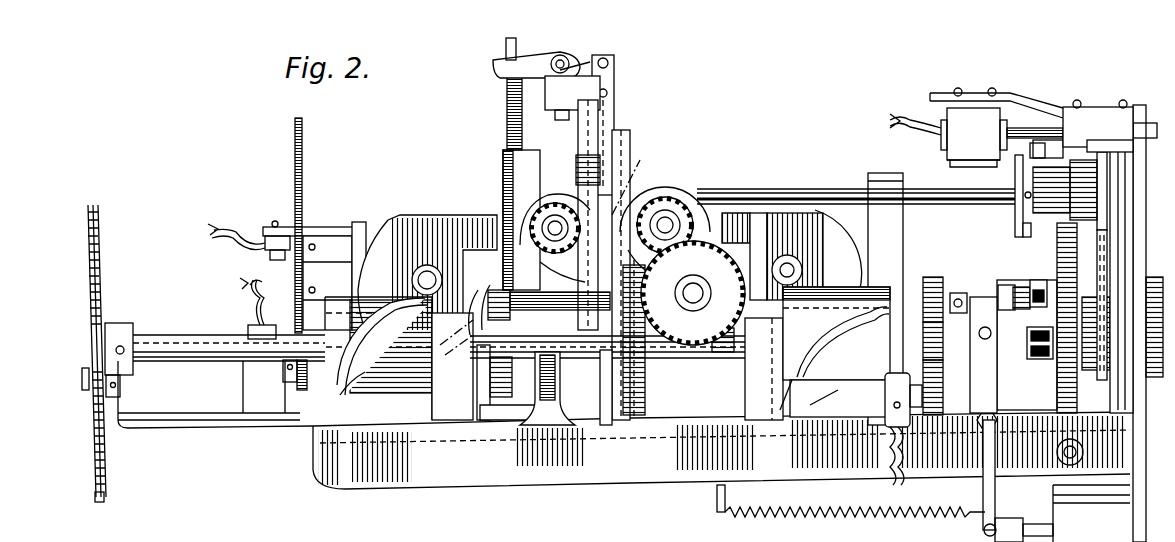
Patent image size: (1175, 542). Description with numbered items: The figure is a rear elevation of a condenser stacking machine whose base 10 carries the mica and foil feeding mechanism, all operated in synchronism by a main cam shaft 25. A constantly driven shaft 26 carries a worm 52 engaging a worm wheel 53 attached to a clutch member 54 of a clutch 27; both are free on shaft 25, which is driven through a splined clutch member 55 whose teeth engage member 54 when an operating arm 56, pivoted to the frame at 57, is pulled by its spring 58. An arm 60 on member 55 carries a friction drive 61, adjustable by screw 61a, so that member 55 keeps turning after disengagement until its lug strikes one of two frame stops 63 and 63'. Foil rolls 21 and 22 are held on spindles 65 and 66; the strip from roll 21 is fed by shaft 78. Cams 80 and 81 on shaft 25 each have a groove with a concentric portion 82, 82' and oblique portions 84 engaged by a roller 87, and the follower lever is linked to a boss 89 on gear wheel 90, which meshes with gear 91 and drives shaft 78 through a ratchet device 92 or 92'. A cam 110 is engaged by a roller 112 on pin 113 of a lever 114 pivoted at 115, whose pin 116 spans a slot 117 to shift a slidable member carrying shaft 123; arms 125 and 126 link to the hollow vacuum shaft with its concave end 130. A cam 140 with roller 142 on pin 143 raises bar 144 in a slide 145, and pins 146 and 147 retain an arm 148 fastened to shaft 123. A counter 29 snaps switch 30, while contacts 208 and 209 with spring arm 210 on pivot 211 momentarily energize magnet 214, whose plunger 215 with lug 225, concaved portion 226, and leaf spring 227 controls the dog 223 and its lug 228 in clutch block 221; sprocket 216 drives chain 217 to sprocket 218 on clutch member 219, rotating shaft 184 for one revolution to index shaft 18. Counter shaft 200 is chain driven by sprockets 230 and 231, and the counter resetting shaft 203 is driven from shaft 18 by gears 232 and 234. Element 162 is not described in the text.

The base 10 is at (633, 483).
The shaft 18 is at (362, 232).
The foil roll 21 is at (832, 242).
The foil roll 22 is at (390, 240).
The main cam shaft 25 is at (700, 352).
The constantly driven shaft 26 is at (1077, 455).
The clutch 27 is at (980, 300).
The counter 29 is at (190, 342).
The switch 30 is at (268, 332).
The worm 52 is at (1082, 447).
The worm wheel 53 is at (1057, 252).
The clutch member 54 is at (1027, 345).
The clutch member 55 is at (1027, 355).
The operating arm 56 is at (983, 490).
The pivot 57 is at (983, 428).
The spring 58 is at (830, 512).
The arm 60 is at (1003, 288).
The friction drive 61 is at (1038, 286).
The adjusting screw 61a is at (1020, 287).
The stop 63 is at (919, 386).
The stop 63' is at (919, 307).
The spindle 65 is at (787, 256).
The spindle 66 is at (427, 265).
The shaft 78 is at (660, 195).
The cam 80 is at (828, 399).
The cam 81 is at (395, 389).
The concentric portion 82 is at (796, 396).
The concentric portion 82' is at (374, 367).
The oblique portion 84 is at (385, 335).
The roller 87 is at (850, 338).
The boss 89 is at (507, 372).
The gear wheel 90 is at (718, 252).
The gear 91 is at (680, 205).
The ratchet device 92 is at (614, 254).
The ratchet device 92' is at (551, 210).
The cam 110 is at (646, 405).
The roller 112 is at (611, 354).
The pin 113 is at (555, 388).
The lever 114 is at (542, 235).
The pivot 115 is at (547, 275).
The pin 116 is at (577, 168).
The slot 117 is at (630, 132).
The shaft 123 is at (584, 58).
The arm 125 is at (612, 58).
The arm 126 is at (612, 78).
The concave end 130 is at (640, 173).
The cam 140 is at (508, 383).
The following roller 142 is at (452, 366).
The pin 143 is at (555, 325).
The bar 144 is at (507, 100).
The slide 145 is at (503, 163).
The pin 146 is at (512, 38).
The pin 147 is at (504, 70).
The arm 148 is at (556, 55).
The gear 162 is at (923, 348).
The shaft 184 is at (929, 196).
The counter shaft 200 is at (86, 386).
The counter resetting shaft 203 is at (283, 370).
The switch contact 208 is at (885, 408).
The switch contact 209 is at (915, 456).
The spring arm 210 is at (957, 293).
The pivot 211 is at (885, 392).
The magnet 214 is at (965, 115).
The plunger 215 is at (1020, 128).
The sprocket wheel 216 is at (1107, 372).
The chain 217 is at (1107, 250).
The sprocket wheel 218 is at (1103, 110).
The clutch member 219 is at (1085, 190).
The clutch block 221 is at (1015, 220).
The dog 223 is at (294, 272).
The lug 225 is at (1050, 140).
The concaved engaging portion 226 is at (1030, 155).
The leaf spring 227 is at (1142, 118).
The lug 228 is at (1051, 190).
The sprocket 230 is at (120, 388).
The sprocket 231 is at (104, 483).
The gear 232 is at (302, 172).
The gear 234 is at (303, 392).